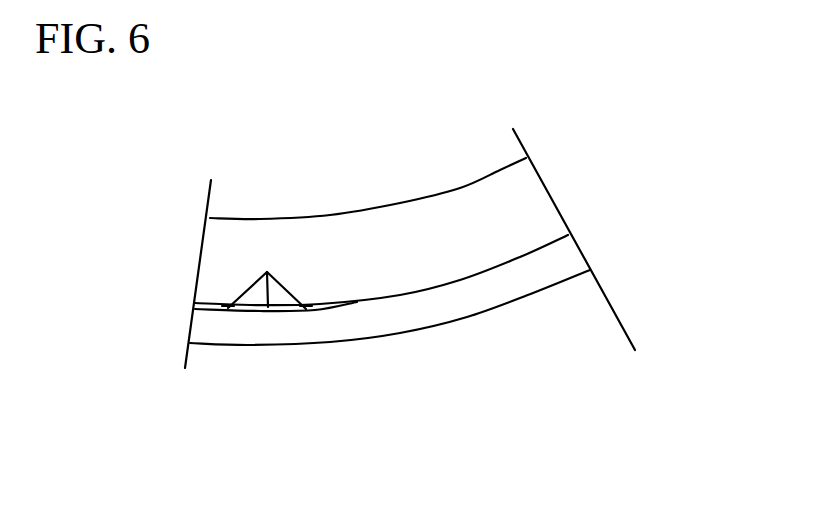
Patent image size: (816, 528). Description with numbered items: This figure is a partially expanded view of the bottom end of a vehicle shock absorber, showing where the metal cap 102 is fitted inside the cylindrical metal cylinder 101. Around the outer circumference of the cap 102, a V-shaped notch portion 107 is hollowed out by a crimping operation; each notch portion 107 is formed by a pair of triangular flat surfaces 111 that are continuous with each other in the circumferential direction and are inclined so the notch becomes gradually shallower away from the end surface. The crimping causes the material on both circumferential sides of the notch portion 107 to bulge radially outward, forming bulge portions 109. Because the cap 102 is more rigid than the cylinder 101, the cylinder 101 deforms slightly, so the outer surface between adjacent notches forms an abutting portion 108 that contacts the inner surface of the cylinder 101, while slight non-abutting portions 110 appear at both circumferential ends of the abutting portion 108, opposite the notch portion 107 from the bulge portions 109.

The cylinder 101 is at (452, 302).
The cap 102 is at (522, 217).
The notch portion 107 is at (270, 312).
The abutting portion 108 is at (533, 253).
The bulge portion 109 is at (225, 310).
The non-abutting portion 110 is at (356, 303).
The triangular flat surface 111 is at (275, 296).